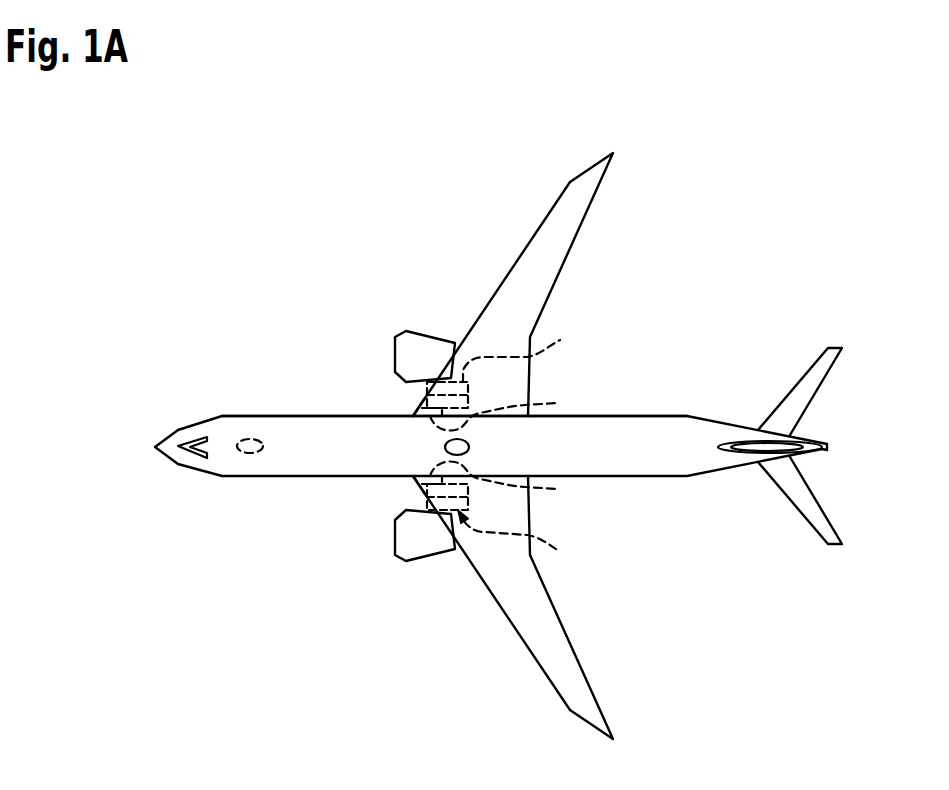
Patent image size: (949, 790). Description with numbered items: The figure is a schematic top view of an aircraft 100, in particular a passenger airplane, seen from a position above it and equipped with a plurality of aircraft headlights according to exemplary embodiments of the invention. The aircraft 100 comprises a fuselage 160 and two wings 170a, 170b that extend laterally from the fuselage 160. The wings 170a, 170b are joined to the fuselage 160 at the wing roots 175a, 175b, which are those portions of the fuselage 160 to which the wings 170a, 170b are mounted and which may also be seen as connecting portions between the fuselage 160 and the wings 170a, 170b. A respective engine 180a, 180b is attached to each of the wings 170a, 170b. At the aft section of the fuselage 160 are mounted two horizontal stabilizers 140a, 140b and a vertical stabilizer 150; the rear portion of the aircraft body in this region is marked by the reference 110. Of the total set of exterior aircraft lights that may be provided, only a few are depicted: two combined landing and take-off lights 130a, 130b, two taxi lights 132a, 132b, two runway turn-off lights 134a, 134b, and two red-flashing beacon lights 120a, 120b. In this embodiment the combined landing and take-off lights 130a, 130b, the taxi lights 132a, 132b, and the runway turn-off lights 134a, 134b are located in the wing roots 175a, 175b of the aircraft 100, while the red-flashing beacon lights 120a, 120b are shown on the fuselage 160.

The aircraft 100 is at (758, 228).
The fuselage 110 is at (836, 409).
The red-flashing beacon light 120a is at (445, 447).
The red-flashing beacon light 120b is at (250, 454).
The combined landing and take-off light 130a is at (524, 409).
The combined landing and take-off light 130b is at (524, 485).
The taxi light 132a is at (424, 402).
The taxi light 132b is at (424, 489).
The runway turn-off light 134a is at (540, 352).
The runway turn-off light 134b is at (538, 542).
The horizontal stabilizer 140a is at (828, 343).
The horizontal stabilizer 140b is at (828, 552).
The vertical stabilizer 150 is at (777, 441).
The fuselage 160 is at (650, 409).
The wing 170a is at (608, 200).
The wing 170b is at (608, 692).
The wing root 175a is at (400, 404).
The wing root 175b is at (400, 487).
The engine 180a is at (407, 328).
The engine 180b is at (407, 565).